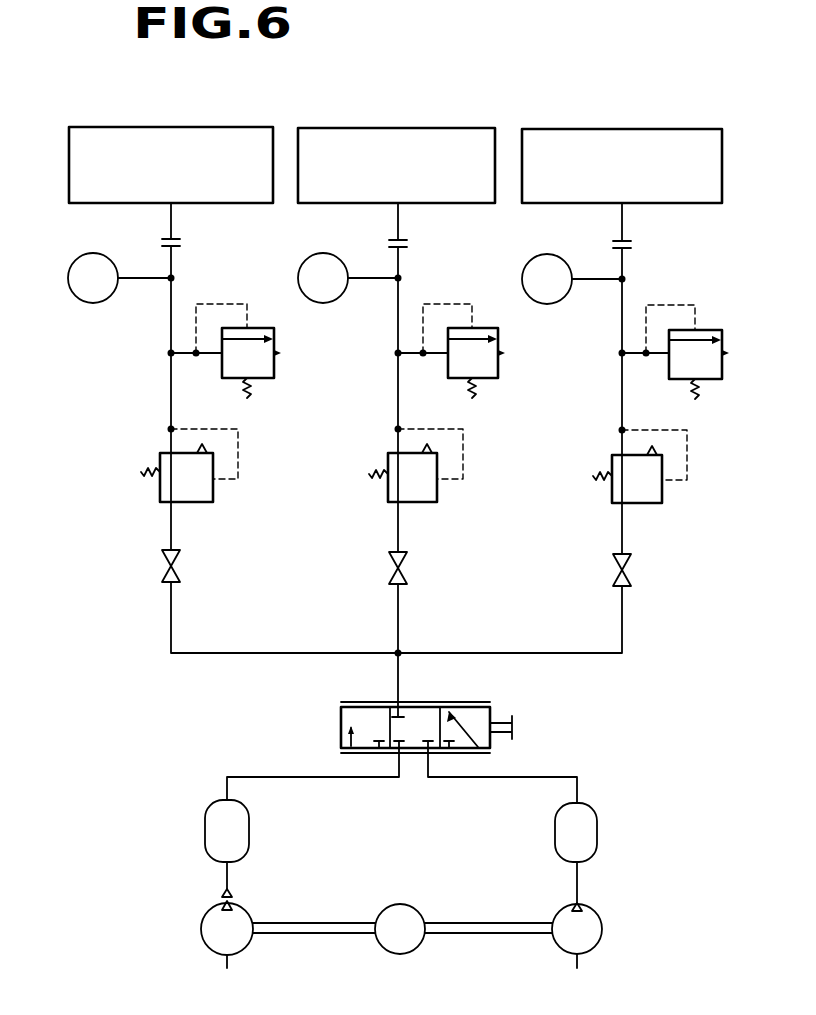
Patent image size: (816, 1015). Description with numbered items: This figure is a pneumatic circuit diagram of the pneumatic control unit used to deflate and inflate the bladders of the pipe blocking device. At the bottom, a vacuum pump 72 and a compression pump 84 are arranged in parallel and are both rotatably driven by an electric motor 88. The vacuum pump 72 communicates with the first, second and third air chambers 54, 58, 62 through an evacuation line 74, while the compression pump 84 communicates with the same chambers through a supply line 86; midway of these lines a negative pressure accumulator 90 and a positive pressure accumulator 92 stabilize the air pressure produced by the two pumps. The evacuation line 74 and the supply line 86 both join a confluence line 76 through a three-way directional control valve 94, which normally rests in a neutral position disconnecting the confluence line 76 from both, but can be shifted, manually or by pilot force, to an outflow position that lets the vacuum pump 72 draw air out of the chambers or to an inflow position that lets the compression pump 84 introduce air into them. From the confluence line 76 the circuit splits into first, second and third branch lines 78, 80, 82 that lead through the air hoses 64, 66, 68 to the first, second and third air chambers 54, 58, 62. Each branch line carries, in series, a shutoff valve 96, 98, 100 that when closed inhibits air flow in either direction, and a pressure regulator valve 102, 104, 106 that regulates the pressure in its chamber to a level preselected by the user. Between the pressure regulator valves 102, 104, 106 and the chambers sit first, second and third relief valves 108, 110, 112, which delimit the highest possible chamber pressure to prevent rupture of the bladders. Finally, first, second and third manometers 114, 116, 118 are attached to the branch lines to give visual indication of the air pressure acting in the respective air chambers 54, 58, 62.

The first air chamber 54 is at (168, 127).
The second air chamber 58 is at (396, 128).
The third air chamber 62 is at (619, 129).
The air hose 64 is at (171, 231).
The air hose 66 is at (398, 233).
The air hose 68 is at (622, 234).
The first manometer 114 is at (75, 290).
The second manometer 116 is at (298, 281).
The third manometer 118 is at (522, 281).
The first relief valve 108 is at (276, 352).
The second relief valve 110 is at (499, 353).
The third relief valve 112 is at (724, 353).
The first pressure regulator valve 102 is at (213, 491).
The second pressure regulator valve 104 is at (437, 492).
The third pressure regulator valve 106 is at (662, 493).
The first shutoff valve 96 is at (161, 560).
The second shutoff valve 98 is at (388, 563).
The third shutoff valve 100 is at (612, 565).
The first branch line 78 is at (171, 626).
The second branch line 80 is at (398, 626).
The third branch line 82 is at (622, 628).
The confluence line 76 is at (398, 672).
The directional control valve 94 is at (496, 710).
The evacuation line 74 is at (248, 777).
The supply line 86 is at (568, 777).
The negative pressure accumulator 90 is at (249, 826).
The positive pressure accumulator 92 is at (597, 826).
The vacuum pump 72 is at (201, 928).
The electric motor 88 is at (402, 904).
The compression pump 84 is at (603, 929).